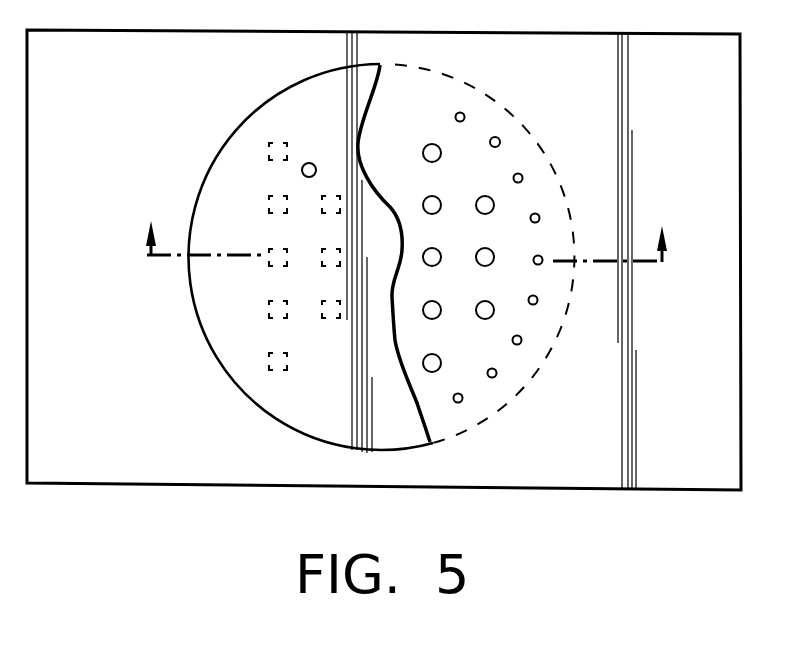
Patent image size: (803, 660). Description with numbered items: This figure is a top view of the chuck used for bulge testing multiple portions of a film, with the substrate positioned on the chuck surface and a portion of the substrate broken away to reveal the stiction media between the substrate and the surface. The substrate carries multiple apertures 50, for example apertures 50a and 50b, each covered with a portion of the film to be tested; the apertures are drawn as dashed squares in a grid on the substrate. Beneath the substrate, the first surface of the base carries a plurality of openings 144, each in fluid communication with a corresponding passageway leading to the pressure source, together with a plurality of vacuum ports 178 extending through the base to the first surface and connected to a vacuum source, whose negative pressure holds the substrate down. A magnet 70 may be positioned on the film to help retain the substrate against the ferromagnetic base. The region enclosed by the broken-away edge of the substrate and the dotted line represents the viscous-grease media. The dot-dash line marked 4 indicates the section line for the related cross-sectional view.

The section line 4- 4 is at (406, 228).
The apertures 50 is at (245, 138).
The aperture 50a is at (277, 248).
The aperture 50b is at (332, 268).
The magnet 70 is at (308, 163).
The openings 144 is at (494, 206).
The vacuum ports 178 is at (499, 137).